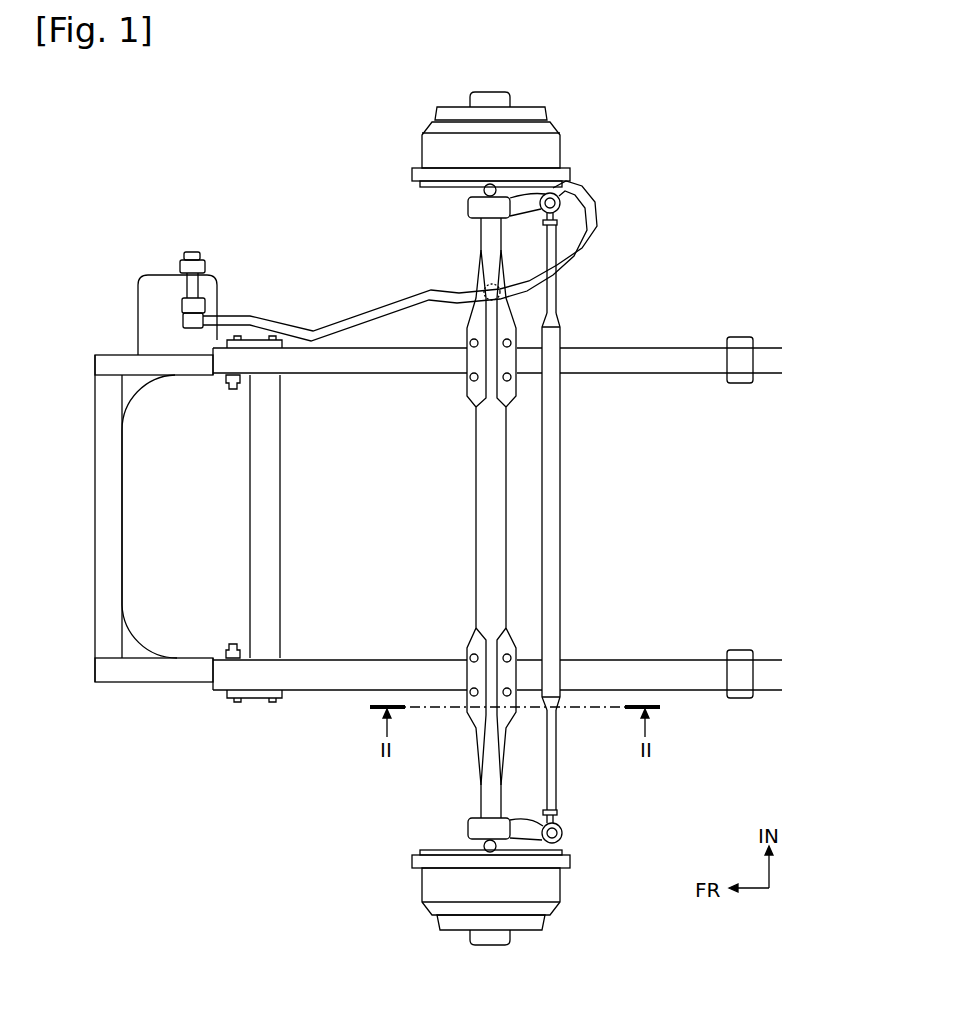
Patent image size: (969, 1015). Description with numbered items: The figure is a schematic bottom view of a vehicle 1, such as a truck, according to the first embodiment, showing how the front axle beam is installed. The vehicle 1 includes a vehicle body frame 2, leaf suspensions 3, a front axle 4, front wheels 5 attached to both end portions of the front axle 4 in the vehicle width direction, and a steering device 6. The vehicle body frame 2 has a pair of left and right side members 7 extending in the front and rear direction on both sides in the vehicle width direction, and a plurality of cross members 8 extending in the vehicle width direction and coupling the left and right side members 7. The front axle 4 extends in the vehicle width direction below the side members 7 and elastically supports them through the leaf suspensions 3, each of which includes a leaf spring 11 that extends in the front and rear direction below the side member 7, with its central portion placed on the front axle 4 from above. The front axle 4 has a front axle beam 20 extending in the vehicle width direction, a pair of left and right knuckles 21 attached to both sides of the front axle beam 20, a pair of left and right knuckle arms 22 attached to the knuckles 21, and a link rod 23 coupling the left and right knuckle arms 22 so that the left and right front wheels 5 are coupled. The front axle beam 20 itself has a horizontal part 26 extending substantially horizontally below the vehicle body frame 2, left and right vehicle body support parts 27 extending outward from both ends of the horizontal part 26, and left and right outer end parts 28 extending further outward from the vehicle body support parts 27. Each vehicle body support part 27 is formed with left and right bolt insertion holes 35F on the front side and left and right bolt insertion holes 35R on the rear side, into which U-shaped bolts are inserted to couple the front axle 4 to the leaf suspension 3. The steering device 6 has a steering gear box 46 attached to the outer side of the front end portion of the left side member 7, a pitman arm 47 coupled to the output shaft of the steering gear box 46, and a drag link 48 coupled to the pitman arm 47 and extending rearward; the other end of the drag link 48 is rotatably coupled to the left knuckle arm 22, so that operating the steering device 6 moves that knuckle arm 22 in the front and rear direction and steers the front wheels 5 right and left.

The vehicle 1 is at (258, 154).
The vehicle body frame 2 is at (130, 684).
The leaf suspension 3 is at (700, 690).
The front axle 4 is at (470, 507).
The front wheel 5 is at (562, 152).
The steering device 6 is at (140, 282).
The side member 7 is at (128, 354).
The cross member 8 is at (94, 620).
The leaf spring 11 is at (660, 347).
The front axle beam 20 is at (477, 547).
The knuckle 21 is at (486, 189).
The knuckle arm 22 is at (568, 202).
The link rod 23 is at (561, 462).
The horizontal part 26 is at (560, 533).
The vehicle body support part 27 is at (466, 362).
The outer end part 28 is at (480, 232).
The front bolt insertion hole 35F is at (468, 342).
The rear bolt insertion hole 35R is at (514, 343).
The steering gear box 46 is at (178, 272).
The pitman arm 47 is at (200, 287).
The drag link 48 is at (300, 323).